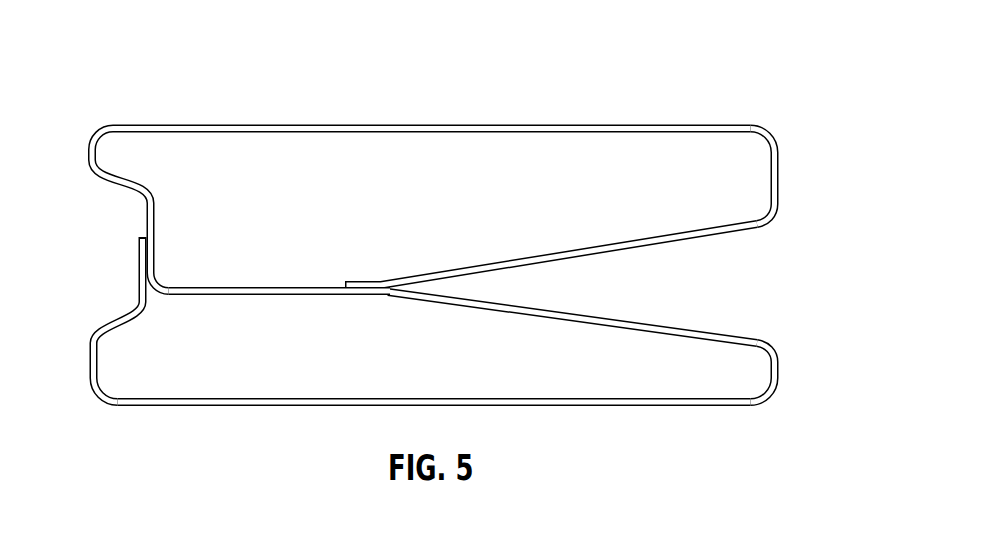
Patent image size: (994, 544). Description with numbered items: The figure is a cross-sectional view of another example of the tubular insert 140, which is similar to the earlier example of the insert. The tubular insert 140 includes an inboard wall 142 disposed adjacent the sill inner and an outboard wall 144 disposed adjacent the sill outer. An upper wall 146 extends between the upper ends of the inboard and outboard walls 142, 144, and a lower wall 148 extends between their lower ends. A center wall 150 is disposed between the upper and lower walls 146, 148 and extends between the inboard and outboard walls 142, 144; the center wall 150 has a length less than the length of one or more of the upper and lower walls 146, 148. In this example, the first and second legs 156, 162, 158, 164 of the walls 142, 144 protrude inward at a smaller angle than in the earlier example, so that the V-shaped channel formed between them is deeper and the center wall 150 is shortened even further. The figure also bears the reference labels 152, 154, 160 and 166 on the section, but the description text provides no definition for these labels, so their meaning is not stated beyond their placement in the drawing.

The tubular insert 140 is at (730, 97).
The inboard wall 142 is at (117, 189).
The outboard wall 144 is at (780, 168).
The upper wall 146 is at (455, 123).
The lower wall 148 is at (508, 405).
The center wall 150 is at (263, 296).
The upper plate 152 is at (348, 226).
The lower plate 154 is at (348, 354).
The first leg 156 is at (780, 197).
The first leg 158 is at (687, 332).
The tapered opening 160 is at (623, 296).
The second leg 162 is at (137, 195).
The second leg 164 is at (92, 329).
The tab 166 is at (127, 279).